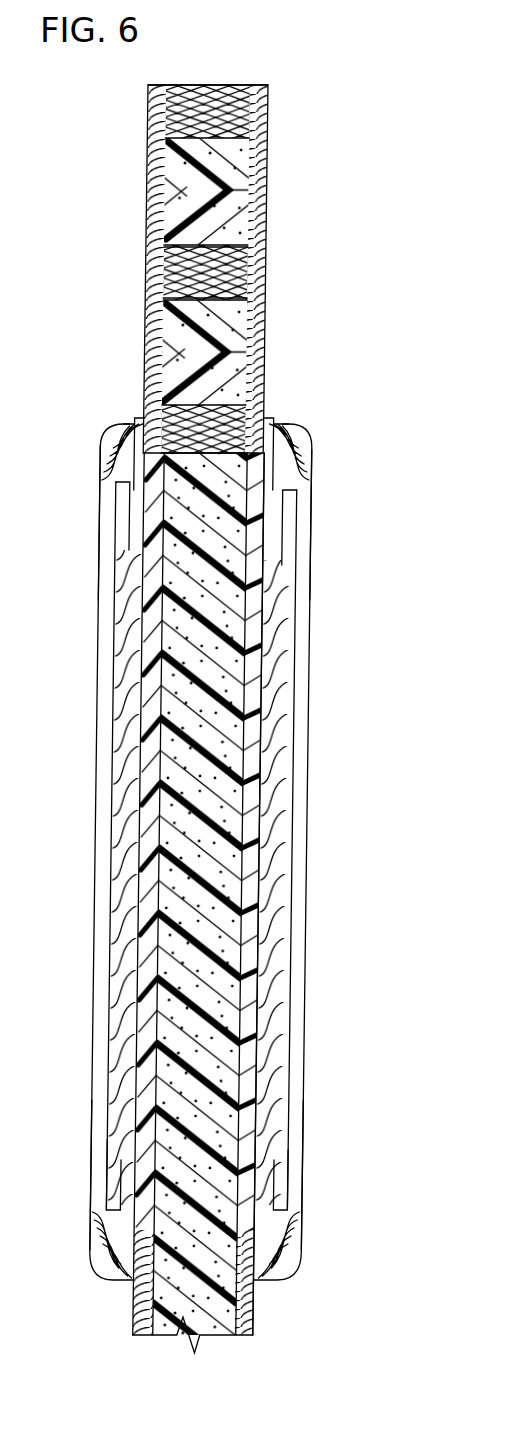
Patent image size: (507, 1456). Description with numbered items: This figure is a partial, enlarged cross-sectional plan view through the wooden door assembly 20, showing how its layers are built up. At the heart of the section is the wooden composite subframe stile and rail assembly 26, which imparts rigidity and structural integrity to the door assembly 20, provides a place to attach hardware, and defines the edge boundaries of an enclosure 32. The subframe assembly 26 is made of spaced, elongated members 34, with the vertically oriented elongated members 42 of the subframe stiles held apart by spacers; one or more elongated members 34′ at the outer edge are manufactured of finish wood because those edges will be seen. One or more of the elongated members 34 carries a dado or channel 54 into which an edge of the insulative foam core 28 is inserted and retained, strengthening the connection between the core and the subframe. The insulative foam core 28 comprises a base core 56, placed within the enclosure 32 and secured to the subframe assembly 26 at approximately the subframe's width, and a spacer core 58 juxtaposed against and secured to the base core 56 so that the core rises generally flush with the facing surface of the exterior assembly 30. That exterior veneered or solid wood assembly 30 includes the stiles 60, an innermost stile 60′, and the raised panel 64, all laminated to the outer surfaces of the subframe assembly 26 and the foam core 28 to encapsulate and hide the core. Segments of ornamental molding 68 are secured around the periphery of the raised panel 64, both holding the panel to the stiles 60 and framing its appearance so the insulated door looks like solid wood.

The wooden door assembly 20 is at (318, 99).
The subframe stile and rail assembly 26 is at (192, 80).
The insulative foam core 28 is at (272, 1085).
The exterior stile, rail, and raised panel assembly 30 is at (134, 312).
The enclosure 32 is at (259, 887).
The elongated member 34 is at (140, 122).
The finish wood elongated member 34′ is at (226, 88).
The vertically oriented elongated member 42 is at (260, 118).
The channel 54 is at (292, 432).
The base core 56 is at (148, 190).
The spacer core 58 is at (266, 960).
The exterior stile 60 is at (140, 214).
The innermost stile 60′ is at (142, 1318).
The raised panel 64 is at (122, 800).
The ornamental molding 68 is at (98, 445).